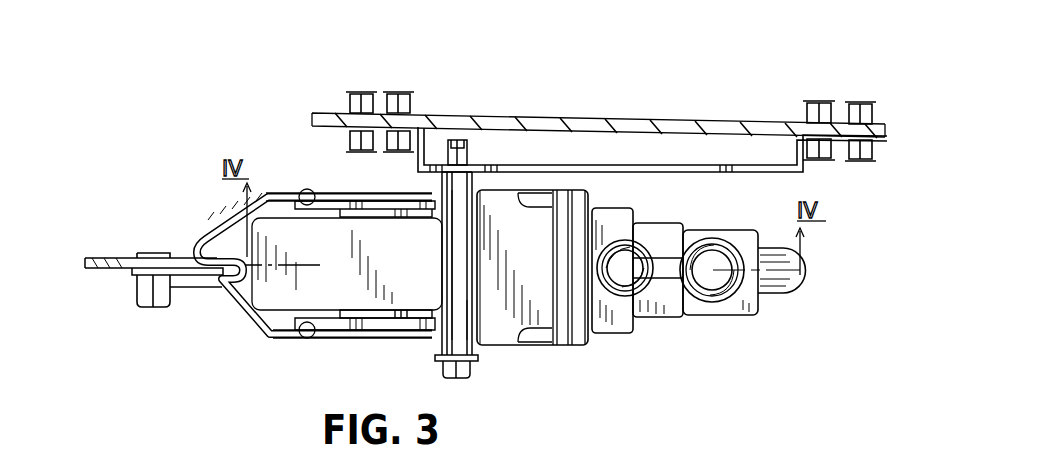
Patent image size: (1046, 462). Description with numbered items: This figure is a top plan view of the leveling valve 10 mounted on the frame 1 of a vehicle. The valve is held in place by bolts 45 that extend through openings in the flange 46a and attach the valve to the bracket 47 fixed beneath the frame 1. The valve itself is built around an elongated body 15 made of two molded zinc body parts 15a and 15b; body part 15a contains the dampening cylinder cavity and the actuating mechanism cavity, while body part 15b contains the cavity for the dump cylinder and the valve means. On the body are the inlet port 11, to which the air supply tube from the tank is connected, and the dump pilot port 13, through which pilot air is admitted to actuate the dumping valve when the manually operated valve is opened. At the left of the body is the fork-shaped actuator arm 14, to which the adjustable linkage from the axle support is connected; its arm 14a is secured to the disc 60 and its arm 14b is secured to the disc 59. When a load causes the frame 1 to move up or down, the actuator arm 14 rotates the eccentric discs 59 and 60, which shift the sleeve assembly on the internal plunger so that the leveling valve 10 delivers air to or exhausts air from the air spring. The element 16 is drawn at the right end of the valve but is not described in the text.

The frame 1 is at (710, 120).
The leveling valve 10 is at (548, 277).
The inlet port 11 is at (728, 245).
The dump pilot port 13 is at (640, 248).
The actuator arm 14 is at (311, 254).
The arm 14a is at (283, 190).
The arm 14b is at (283, 340).
The elongated body 15 is at (537, 351).
The body part 15a is at (405, 330).
The body part 15b is at (627, 336).
The plunger 16 is at (806, 276).
The bolts 45 is at (470, 158).
The flange 46a is at (470, 352).
The bracket 47 is at (784, 176).
The disc 59 is at (355, 337).
The disc 60 is at (362, 203).